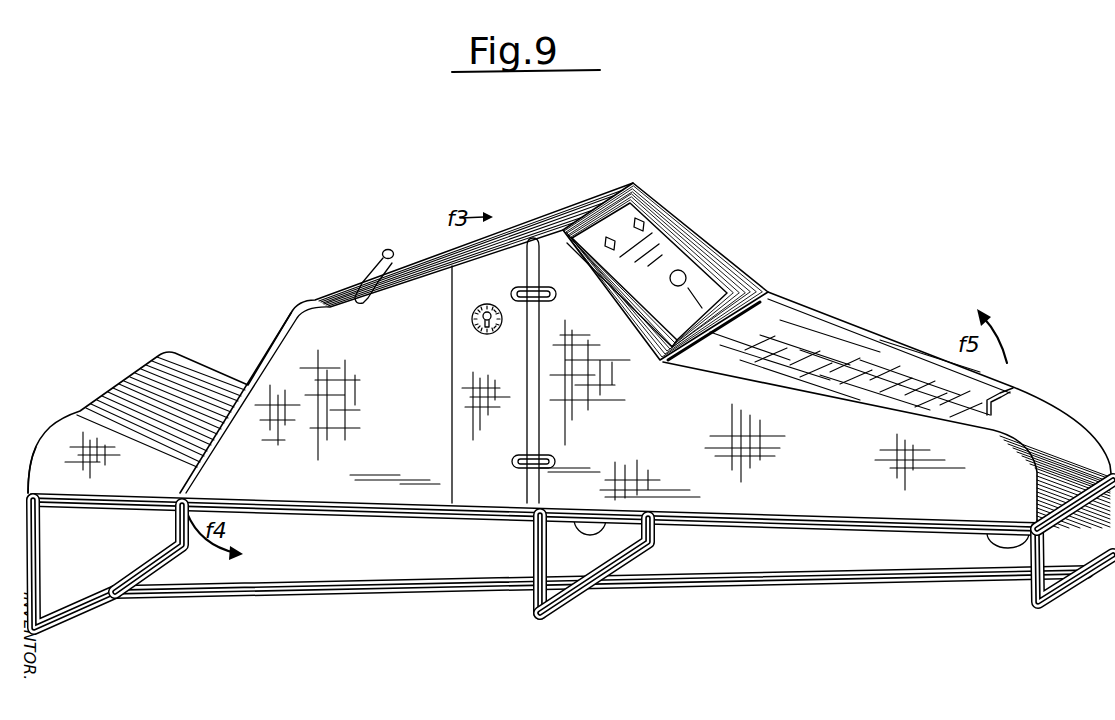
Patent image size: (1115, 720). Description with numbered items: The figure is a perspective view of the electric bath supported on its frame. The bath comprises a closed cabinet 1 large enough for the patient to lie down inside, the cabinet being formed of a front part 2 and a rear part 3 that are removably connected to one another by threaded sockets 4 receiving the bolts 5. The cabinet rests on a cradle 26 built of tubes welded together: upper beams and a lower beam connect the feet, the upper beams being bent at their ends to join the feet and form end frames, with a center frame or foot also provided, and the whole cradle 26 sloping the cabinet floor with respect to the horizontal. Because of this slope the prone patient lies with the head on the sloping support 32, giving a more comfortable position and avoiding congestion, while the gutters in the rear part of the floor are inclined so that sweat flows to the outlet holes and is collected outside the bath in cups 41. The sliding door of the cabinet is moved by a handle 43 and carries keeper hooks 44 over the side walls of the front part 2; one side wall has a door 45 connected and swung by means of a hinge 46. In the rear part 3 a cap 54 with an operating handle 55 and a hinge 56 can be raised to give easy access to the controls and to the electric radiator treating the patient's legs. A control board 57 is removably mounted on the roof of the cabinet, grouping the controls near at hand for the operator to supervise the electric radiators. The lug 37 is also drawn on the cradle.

The closed cabinet 1 is at (521, 243).
The front part 2 is at (410, 300).
The rear part 3 is at (840, 370).
The threaded sockets 4 is at (515, 292).
The bolts 5 is at (540, 288).
The cradle 26 is at (560, 562).
The sloping support 32 is at (110, 380).
The lug 37 is at (588, 523).
The cups 41 is at (1000, 540).
The handle 43 is at (377, 257).
The keeper hooks 44 is at (343, 270).
The door 45 is at (327, 317).
The hinge 46 is at (450, 375).
The cap 54 is at (907, 370).
The operating handle 55 is at (1003, 387).
The hinge 56 is at (745, 390).
The control board 57 is at (667, 243).